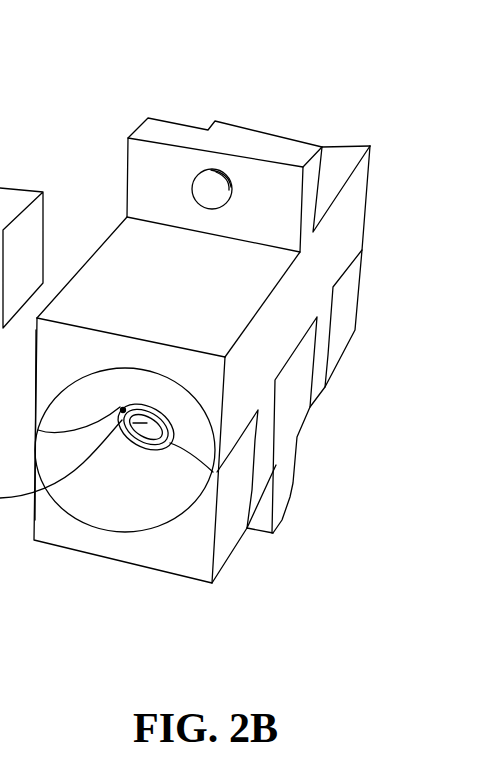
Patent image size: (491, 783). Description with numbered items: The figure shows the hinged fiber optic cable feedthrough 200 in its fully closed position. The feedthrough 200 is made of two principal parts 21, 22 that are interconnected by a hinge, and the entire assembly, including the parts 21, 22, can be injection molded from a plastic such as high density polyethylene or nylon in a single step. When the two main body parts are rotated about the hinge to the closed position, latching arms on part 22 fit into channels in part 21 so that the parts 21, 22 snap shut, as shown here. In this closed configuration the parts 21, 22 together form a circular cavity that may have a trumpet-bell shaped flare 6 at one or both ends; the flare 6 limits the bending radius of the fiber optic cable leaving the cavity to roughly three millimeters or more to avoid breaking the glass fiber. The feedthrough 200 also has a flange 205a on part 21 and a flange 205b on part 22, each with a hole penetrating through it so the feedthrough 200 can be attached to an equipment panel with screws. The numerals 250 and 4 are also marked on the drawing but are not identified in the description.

The fiber optic cable feedthrough 200 is at (67, 132).
The flange 205a is at (294, 491).
The flange 205b is at (208, 190).
The principal part 21 is at (160, 571).
The principal part 22 is at (90, 256).
The trumpet-bell shaped flare 6 is at (120, 500).
The adjacent block 250 is at (0, 170).
The element 4 is at (0, 96).